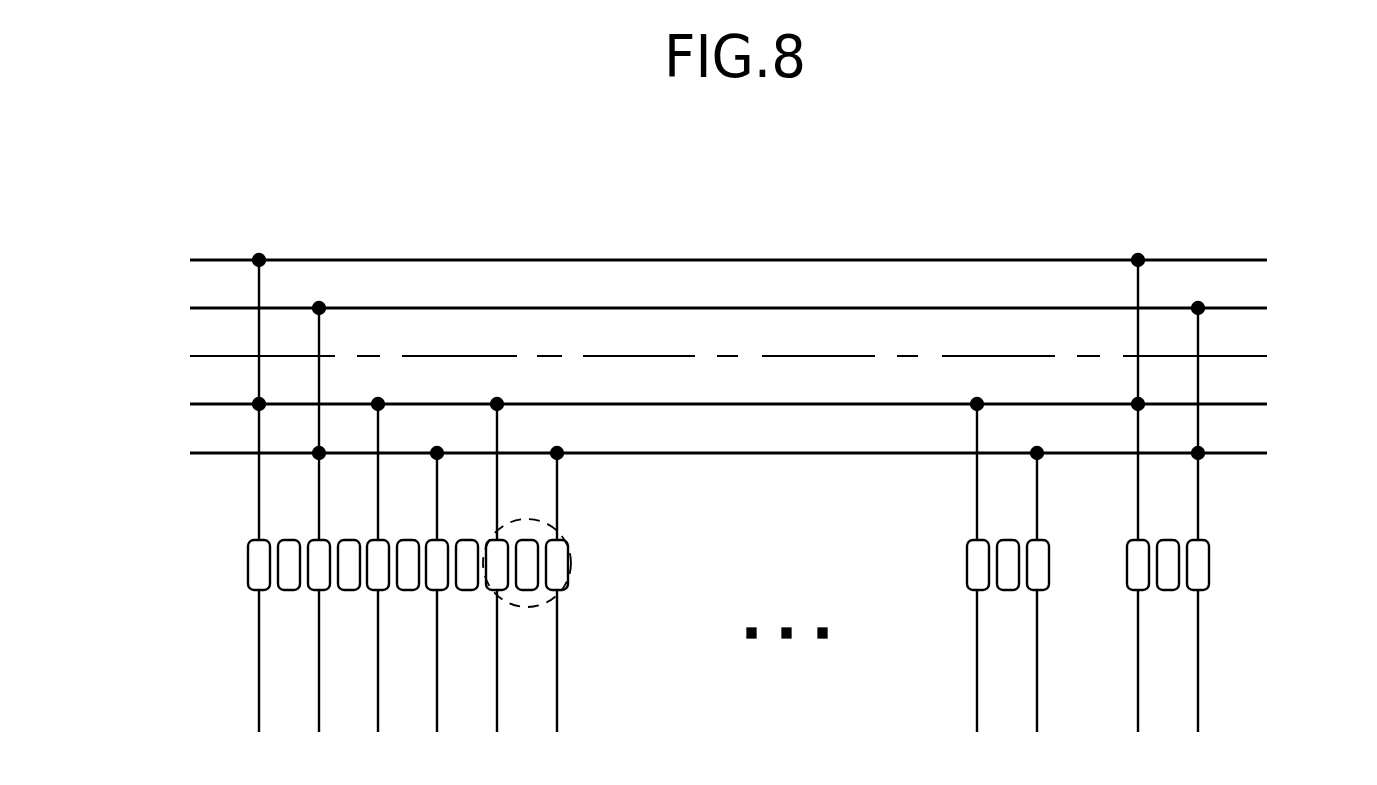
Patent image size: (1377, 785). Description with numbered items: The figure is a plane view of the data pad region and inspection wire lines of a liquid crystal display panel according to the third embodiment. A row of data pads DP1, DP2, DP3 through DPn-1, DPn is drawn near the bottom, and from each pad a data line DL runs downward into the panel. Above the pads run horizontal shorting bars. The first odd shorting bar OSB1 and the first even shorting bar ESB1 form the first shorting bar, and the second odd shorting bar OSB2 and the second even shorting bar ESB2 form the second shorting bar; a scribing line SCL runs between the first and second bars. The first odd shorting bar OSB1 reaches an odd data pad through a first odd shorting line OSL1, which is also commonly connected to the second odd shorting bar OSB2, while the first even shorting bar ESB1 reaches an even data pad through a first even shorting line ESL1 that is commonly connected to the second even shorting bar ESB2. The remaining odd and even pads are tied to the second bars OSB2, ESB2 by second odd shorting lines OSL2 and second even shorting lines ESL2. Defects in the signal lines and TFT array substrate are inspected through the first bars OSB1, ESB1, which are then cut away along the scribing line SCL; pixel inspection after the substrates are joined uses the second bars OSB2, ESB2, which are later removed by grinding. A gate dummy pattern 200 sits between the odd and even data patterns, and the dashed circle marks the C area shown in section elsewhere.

The first odd shorting bar OSB1 is at (1267, 260).
The first even shorting bar ESB1 is at (1267, 308).
The scribing line SCL is at (1267, 356).
The second odd shorting bar OSB2 is at (1267, 404).
The second even shorting bar ESB2 is at (1267, 453).
The first odd shorting line OSL1 is at (259, 289).
The first even shorting line ESL1 is at (319, 338).
The second odd shorting line OSL2 is at (259, 430).
The second even shorting line ESL2 is at (319, 490).
The data line DL is at (719, 679).
The first data pad DP1 is at (254, 587).
The second data pad DP2 is at (316, 587).
The third data pad DP3 is at (374, 587).
The gate dummy pattern 200 is at (527, 589).
The C area C is at (560, 534).
The (n-1)th data pad DPn-1 is at (1133, 587).
The nth data pad DPn is at (1192, 587).